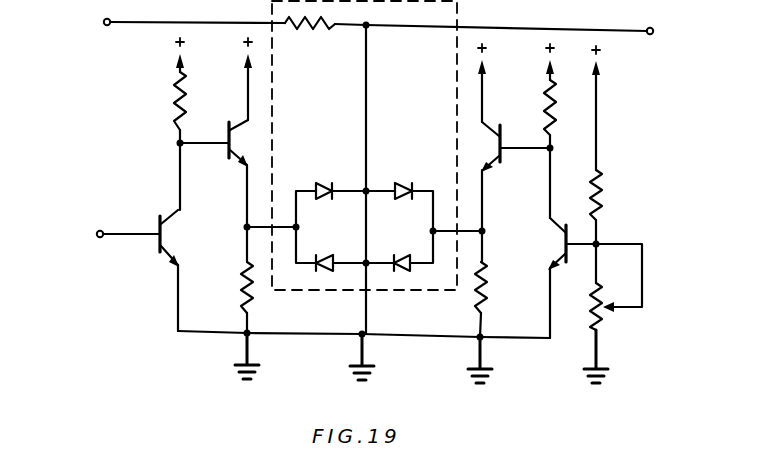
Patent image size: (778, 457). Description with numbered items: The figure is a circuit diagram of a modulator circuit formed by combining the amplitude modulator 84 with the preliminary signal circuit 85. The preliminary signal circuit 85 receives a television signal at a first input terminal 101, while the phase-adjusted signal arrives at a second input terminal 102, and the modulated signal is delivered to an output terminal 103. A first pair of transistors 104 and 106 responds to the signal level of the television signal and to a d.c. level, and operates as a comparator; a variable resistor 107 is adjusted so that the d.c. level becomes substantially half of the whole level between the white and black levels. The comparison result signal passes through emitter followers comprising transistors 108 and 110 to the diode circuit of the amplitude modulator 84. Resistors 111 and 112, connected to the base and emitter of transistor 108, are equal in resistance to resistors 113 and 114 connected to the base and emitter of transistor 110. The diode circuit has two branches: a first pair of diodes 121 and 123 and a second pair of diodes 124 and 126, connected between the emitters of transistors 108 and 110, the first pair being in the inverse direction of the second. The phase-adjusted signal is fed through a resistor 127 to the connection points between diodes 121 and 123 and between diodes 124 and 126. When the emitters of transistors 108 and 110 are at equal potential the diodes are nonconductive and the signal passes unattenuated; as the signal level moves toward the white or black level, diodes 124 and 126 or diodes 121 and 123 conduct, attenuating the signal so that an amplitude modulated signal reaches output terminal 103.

The amplitude modulator 84 is at (457, 3).
The preliminary signal circuit 85 is at (112, 286).
The first input terminal 101 is at (102, 230).
The second input terminal 102 is at (104, 19).
The output terminal 103 is at (665, 18).
The transistor 104 is at (170, 208).
The transistor 106 is at (550, 258).
The variable resistor 107 is at (600, 322).
The transistor 108 is at (237, 168).
The transistor 110 is at (495, 176).
The resistor 111 is at (177, 105).
The resistor 112 is at (242, 297).
The resistor 113 is at (546, 105).
The resistor 114 is at (488, 300).
The diode 121 is at (332, 186).
The diode 123 is at (412, 186).
The diode 124 is at (338, 270).
The diode 126 is at (414, 270).
The resistor 127 is at (295, 30).